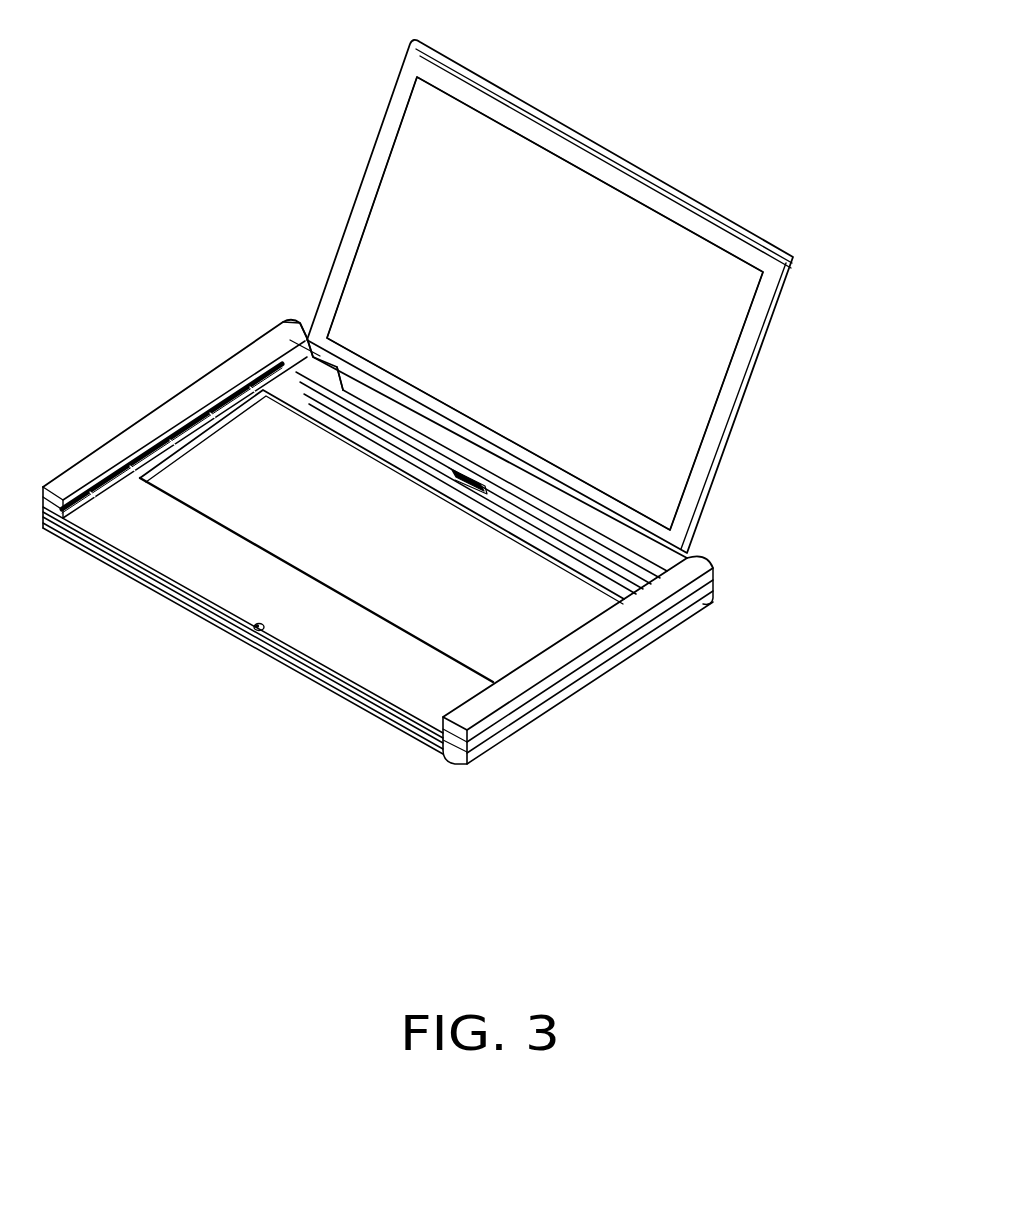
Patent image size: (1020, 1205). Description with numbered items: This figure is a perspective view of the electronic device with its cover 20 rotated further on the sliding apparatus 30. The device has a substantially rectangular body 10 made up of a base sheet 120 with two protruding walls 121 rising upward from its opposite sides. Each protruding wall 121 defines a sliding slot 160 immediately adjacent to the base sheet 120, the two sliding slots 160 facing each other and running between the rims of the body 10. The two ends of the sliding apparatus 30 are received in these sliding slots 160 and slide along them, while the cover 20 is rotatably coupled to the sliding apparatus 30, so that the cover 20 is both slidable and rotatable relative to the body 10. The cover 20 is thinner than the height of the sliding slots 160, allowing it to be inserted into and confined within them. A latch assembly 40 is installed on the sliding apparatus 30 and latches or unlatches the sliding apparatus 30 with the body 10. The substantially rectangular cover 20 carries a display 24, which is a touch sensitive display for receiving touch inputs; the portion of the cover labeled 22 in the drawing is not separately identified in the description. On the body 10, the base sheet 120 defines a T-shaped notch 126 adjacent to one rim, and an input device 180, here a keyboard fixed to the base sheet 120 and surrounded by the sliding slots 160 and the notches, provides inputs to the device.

The body 10 is at (416, 488).
The cover 20 is at (595, 296).
The display frame 22 is at (702, 475).
The display 24 is at (690, 380).
The sliding apparatus 30 is at (313, 372).
The latch assembly 40 is at (455, 472).
The base sheet 120 is at (215, 575).
The protruding wall 121 is at (193, 407).
The T-shaped notch 126 is at (262, 632).
The sliding slot 160 is at (102, 488).
The input device 180 is at (545, 598).